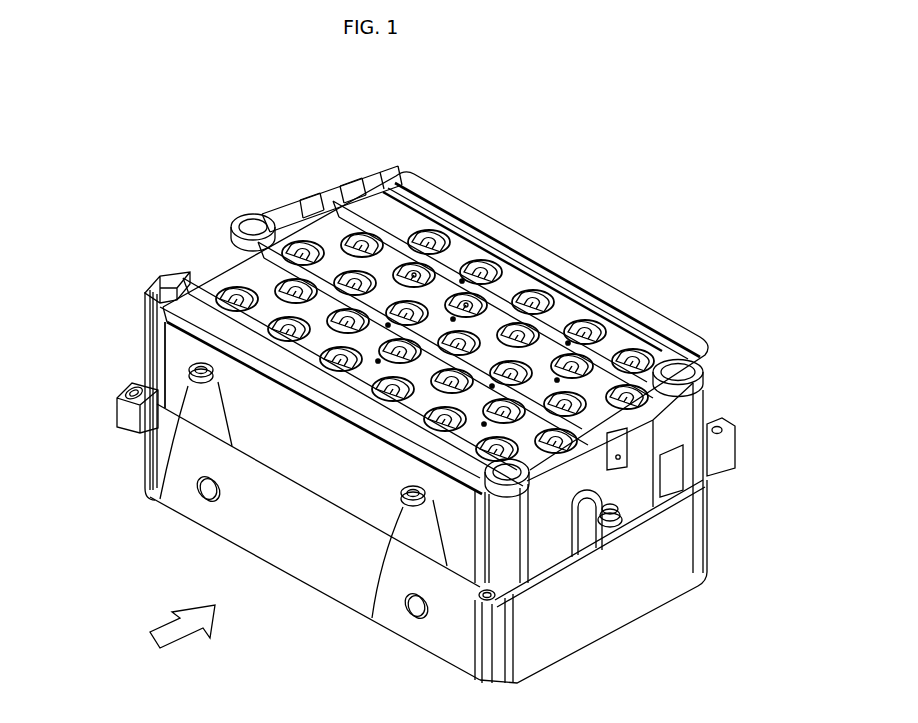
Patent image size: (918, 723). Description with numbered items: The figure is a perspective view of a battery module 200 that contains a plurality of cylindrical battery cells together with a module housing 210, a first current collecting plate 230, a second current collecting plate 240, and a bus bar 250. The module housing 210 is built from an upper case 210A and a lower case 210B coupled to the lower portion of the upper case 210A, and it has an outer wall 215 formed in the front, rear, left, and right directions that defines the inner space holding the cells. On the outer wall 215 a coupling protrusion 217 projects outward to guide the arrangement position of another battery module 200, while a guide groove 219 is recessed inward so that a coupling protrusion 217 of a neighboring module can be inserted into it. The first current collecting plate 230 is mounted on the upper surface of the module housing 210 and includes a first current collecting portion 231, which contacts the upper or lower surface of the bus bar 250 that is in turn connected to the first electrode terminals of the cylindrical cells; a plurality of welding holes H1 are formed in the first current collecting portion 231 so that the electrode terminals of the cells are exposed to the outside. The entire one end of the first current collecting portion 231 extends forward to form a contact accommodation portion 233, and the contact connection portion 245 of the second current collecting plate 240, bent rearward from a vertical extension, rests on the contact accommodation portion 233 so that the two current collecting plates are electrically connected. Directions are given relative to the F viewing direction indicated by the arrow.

The battery module 200 is at (232, 95).
The module housing 210 is at (62, 345).
The upper case 210A is at (145, 344).
The lower case 210B is at (145, 456).
The outer wall 215 is at (295, 525).
The coupling protrusion 217 is at (160, 499).
The guide groove 219 is at (198, 502).
The first current collecting plate 230 is at (313, 210).
The first current collecting portion 231 is at (333, 227).
The contact accommodation portion 233 is at (183, 318).
The second current collecting plate 240 is at (653, 263).
The contact connection portion 245 is at (547, 262).
The bus bar 250 is at (236, 300).
The welding holes H1 is at (468, 307).